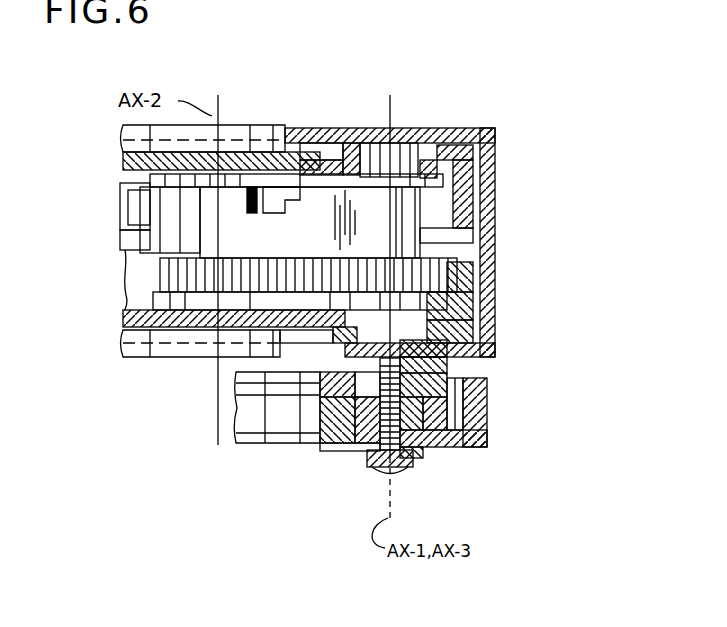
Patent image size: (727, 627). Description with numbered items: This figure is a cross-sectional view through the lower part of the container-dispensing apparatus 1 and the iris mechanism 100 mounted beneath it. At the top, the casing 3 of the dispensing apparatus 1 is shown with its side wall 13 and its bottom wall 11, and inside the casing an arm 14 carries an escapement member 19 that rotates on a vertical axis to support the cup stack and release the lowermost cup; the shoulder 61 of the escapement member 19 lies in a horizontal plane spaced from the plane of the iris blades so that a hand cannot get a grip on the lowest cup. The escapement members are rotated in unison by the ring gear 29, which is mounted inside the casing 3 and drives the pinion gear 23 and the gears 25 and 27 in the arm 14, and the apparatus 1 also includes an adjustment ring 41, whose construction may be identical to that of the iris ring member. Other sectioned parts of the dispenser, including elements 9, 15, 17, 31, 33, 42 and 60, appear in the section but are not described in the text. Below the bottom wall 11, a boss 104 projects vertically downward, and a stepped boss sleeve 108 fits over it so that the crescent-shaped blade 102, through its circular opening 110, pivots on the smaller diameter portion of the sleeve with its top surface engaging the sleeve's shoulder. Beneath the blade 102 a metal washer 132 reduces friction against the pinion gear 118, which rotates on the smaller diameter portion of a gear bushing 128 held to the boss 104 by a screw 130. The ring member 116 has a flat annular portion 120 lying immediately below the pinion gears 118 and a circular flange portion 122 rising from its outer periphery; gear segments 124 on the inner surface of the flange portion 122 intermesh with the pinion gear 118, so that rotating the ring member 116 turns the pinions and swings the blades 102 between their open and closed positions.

The container-dispensing apparatus 1 is at (520, 124).
The casing 3 is at (502, 192).
The rotor body 9 is at (312, 130).
The bottom wall 11 is at (167, 356).
The side wall 13 is at (497, 213).
The arm 14 is at (121, 238).
The support member 15 is at (213, 180).
The lower plate 17 is at (157, 312).
The escapement member 19 is at (150, 222).
The pinion gear 23 is at (470, 240).
The gear 25 is at (168, 273).
The gear 27 is at (272, 287).
The ring gear 29 is at (457, 286).
The lower shaft 31 is at (152, 319).
The seal 33 is at (485, 300).
The adjustment ring 41 is at (493, 215).
The upper shaft 42 is at (123, 167).
The upper plate 60 is at (145, 177).
The shoulder 61 is at (155, 213).
The iris mechanism 100 is at (515, 486).
The blade 102 is at (257, 387).
The boss 104 is at (447, 351).
The boss sleeve 108 is at (450, 368).
The circular opening 110 is at (332, 383).
The ring member 116 is at (493, 454).
The pinion gear 118 is at (484, 383).
The flat annular portion 120 is at (323, 450).
The circular flange portion 122 is at (481, 410).
The gear segment 124 is at (481, 427).
The gear bushing 128 is at (440, 452).
The screw 130 is at (403, 458).
The metal washer 132 is at (463, 395).